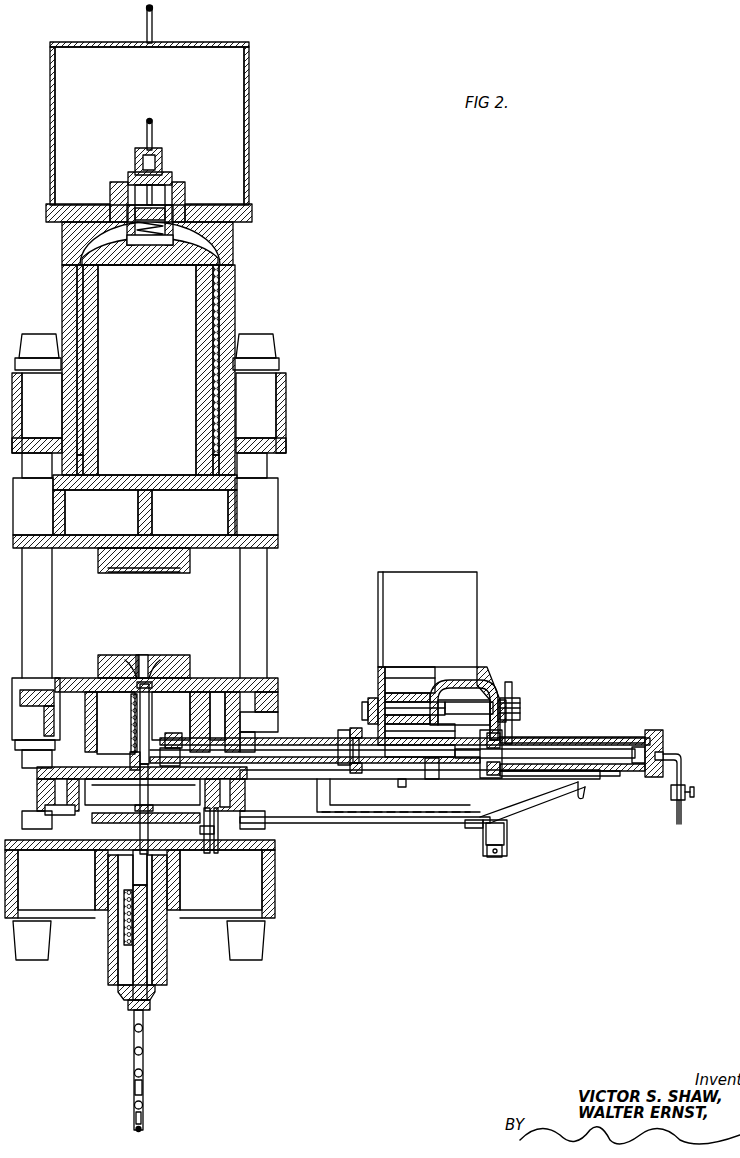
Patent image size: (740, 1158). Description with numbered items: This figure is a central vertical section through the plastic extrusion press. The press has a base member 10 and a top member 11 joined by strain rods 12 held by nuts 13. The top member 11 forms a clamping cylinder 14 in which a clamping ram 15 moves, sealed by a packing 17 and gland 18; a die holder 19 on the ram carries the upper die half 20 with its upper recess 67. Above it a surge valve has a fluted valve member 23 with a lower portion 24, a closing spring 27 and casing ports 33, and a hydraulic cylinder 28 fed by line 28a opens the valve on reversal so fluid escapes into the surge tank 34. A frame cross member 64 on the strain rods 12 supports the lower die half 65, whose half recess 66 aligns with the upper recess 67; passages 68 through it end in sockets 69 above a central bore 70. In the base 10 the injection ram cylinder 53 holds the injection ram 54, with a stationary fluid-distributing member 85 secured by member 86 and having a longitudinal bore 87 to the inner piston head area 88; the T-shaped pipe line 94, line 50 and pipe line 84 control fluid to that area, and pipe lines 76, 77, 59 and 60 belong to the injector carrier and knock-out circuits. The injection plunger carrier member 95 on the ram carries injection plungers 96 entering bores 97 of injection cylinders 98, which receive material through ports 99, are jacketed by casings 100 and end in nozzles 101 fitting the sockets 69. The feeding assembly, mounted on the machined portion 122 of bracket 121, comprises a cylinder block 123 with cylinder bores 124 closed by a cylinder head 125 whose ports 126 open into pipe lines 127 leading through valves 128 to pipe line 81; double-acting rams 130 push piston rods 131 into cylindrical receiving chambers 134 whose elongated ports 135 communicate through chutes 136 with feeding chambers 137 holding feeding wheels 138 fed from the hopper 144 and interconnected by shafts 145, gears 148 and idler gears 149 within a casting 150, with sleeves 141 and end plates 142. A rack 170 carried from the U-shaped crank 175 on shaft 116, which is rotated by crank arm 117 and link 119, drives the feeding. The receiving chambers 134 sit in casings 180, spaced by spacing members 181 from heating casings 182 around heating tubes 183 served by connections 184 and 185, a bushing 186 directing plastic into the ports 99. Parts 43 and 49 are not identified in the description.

The control rod 43 is at (152, 25).
The surge tank 34 is at (249, 97).
The line 28a is at (153, 130).
The hydraulic cylinder 28 is at (162, 154).
The fluted valve member 23 is at (172, 178).
The lower portion of valve member 24 is at (112, 194).
The clamping cylinder 14 is at (62, 268).
The spring 27 is at (150, 242).
The ports 33 is at (177, 236).
The clamping ram 15 is at (98, 330).
The packing 17 is at (83, 440).
The gland 18 is at (84, 458).
The nuts 13 is at (40, 343).
The top member 11 is at (279, 405).
The strain rods 12 is at (38, 474).
The die holder 19 is at (130, 477).
The upper half of the die 20 is at (98, 568).
The upper recess 67 is at (128, 573).
The lower die half 65 is at (188, 657).
The half recess 66 is at (144, 657).
The sockets 69 is at (130, 658).
The passages 68 is at (154, 660).
The frame cross member 64 is at (50, 678).
The central bore 70 is at (98, 672).
The casings 100 is at (131, 700).
The bores 97 is at (135, 713).
The injection cylinders 98 is at (131, 746).
The ports 99 is at (150, 722).
The nozzle 101 is at (172, 713).
The connection 184 is at (178, 738).
The bushing 186 is at (238, 730).
The heating casings 182 is at (275, 740).
The heating tubes 183 is at (296, 740).
The connection 185 is at (340, 735).
The spacing members 181 is at (356, 730).
The injection plungers 96 is at (140, 793).
The injection plunger carrier member 95 is at (170, 812).
The inner piston head area 88 is at (143, 870).
The link 119 is at (206, 855).
The crank arm 117 is at (217, 850).
The base member 10 is at (66, 912).
The injection ram cylinder 53 is at (110, 924).
The injection ram 54 is at (124, 900).
The stationary fluid-distributing member 85 is at (152, 950).
The member 86 is at (118, 988).
The longitudinal bore 87 is at (128, 1004).
The T-shaped pipe line 94 is at (134, 1016).
The pipe line 84 is at (134, 1029).
The line 50 is at (134, 1051).
The ball 49 is at (134, 1074).
The pipe lines 77 is at (143, 1088).
The pipe line 76 is at (134, 1105).
The pipe line 60 is at (135, 1118).
The pipe line 59 is at (135, 1129).
The hopper 144 is at (380, 606).
The feeding chambers 137 is at (398, 693).
The idler gears 149 is at (410, 676).
The feeding wheels 138 is at (420, 702).
The sleeves 141 is at (373, 698).
The end plates 142 is at (366, 705).
The shafts 145 is at (464, 710).
The casting 150 is at (485, 690).
The gears 148 is at (500, 700).
The rack 170 is at (512, 698).
The chutes 136 is at (430, 735).
The piston rods 131 is at (540, 750).
The cylinder block 123 is at (500, 772).
The cylinder bores 124 is at (525, 770).
The double-acting rams 130 is at (636, 748).
The cylinder head 125 is at (660, 733).
The ports 126 is at (662, 753).
The pipe lines 127 is at (682, 766).
The valves 128 is at (684, 788).
The pipe line 81 is at (681, 820).
The casings 180 is at (378, 779).
The cylindrical receiving chambers 134 is at (402, 786).
The elongated ports 135 is at (430, 780).
The shaft 116 is at (310, 818).
The bracket 121 is at (548, 792).
The machined portion 122 is at (573, 796).
The U-shaped crank 175 is at (483, 838).